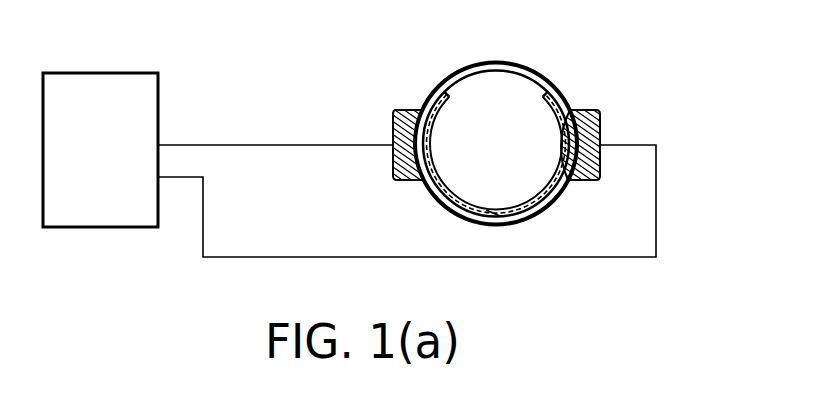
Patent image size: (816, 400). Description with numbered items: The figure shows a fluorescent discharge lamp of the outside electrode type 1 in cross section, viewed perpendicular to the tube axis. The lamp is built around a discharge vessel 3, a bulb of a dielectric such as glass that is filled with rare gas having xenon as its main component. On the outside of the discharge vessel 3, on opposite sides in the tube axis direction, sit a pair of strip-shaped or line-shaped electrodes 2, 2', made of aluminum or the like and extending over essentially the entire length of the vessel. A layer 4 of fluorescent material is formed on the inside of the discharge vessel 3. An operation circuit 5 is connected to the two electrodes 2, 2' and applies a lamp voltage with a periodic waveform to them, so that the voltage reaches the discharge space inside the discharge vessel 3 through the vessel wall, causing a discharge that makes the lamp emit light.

The fluorescent discharge lamp of the outside electrode type 1 is at (508, 63).
The electrode 2 is at (410, 131).
The electrode 2' is at (590, 131).
The discharge vessel 3 is at (542, 78).
The layer of fluorescent material 4 is at (550, 197).
The operation circuit 5 is at (140, 73).